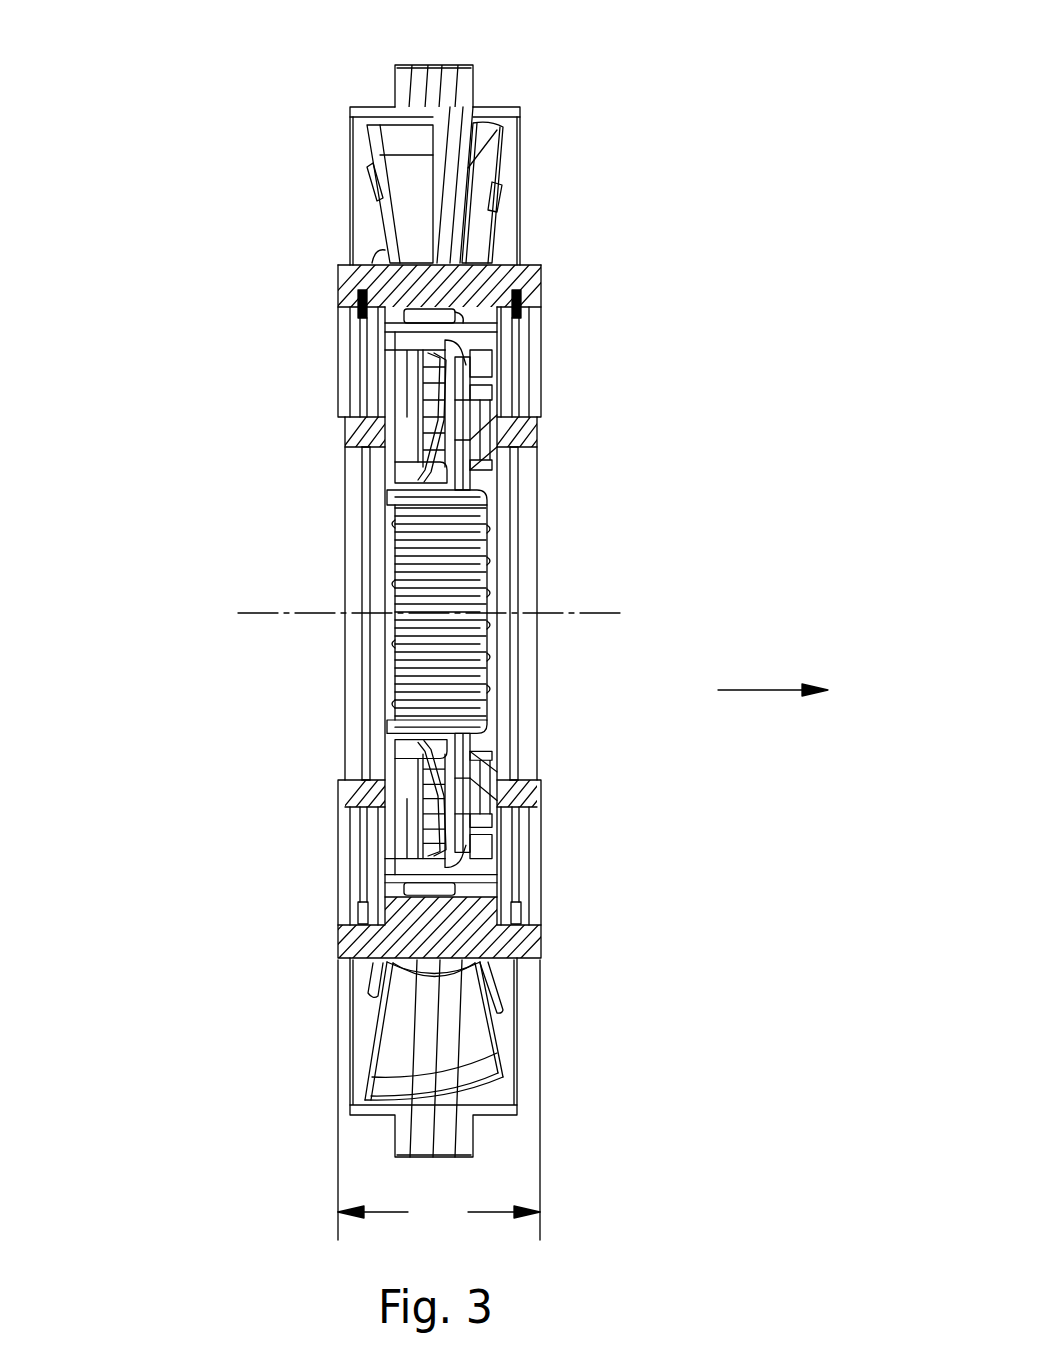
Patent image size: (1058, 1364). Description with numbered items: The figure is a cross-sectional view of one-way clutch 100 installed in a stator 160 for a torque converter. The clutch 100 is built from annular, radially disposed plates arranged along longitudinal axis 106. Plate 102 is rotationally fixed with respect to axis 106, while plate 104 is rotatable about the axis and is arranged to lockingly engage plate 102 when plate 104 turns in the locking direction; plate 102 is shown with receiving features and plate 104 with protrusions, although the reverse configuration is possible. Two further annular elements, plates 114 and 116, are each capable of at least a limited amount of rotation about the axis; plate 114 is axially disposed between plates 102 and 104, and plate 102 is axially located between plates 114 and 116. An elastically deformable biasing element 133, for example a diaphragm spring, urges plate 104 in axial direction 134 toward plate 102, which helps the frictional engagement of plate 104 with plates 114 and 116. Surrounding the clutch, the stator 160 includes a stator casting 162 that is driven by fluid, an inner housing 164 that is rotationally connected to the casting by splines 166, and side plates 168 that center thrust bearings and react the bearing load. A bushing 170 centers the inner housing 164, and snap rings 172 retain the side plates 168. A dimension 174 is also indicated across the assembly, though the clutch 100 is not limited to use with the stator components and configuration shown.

The one-way clutch 100 is at (198, 497).
The plate 102 is at (480, 448).
The plate 104 is at (458, 363).
The longitudinal axis 106 is at (620, 610).
The plate 114 is at (498, 463).
The plate 116 is at (493, 365).
The biasing element 133 is at (440, 378).
The axial direction 134 is at (748, 690).
The stator 160 is at (712, 133).
The stator casting 162 is at (352, 108).
The inner housing 164 is at (478, 886).
The splines 166 is at (453, 905).
The side plates 168 is at (355, 793).
The bushing 170 is at (410, 725).
The snap rings 172 is at (518, 928).
The hub diameter 174 is at (439, 1100).